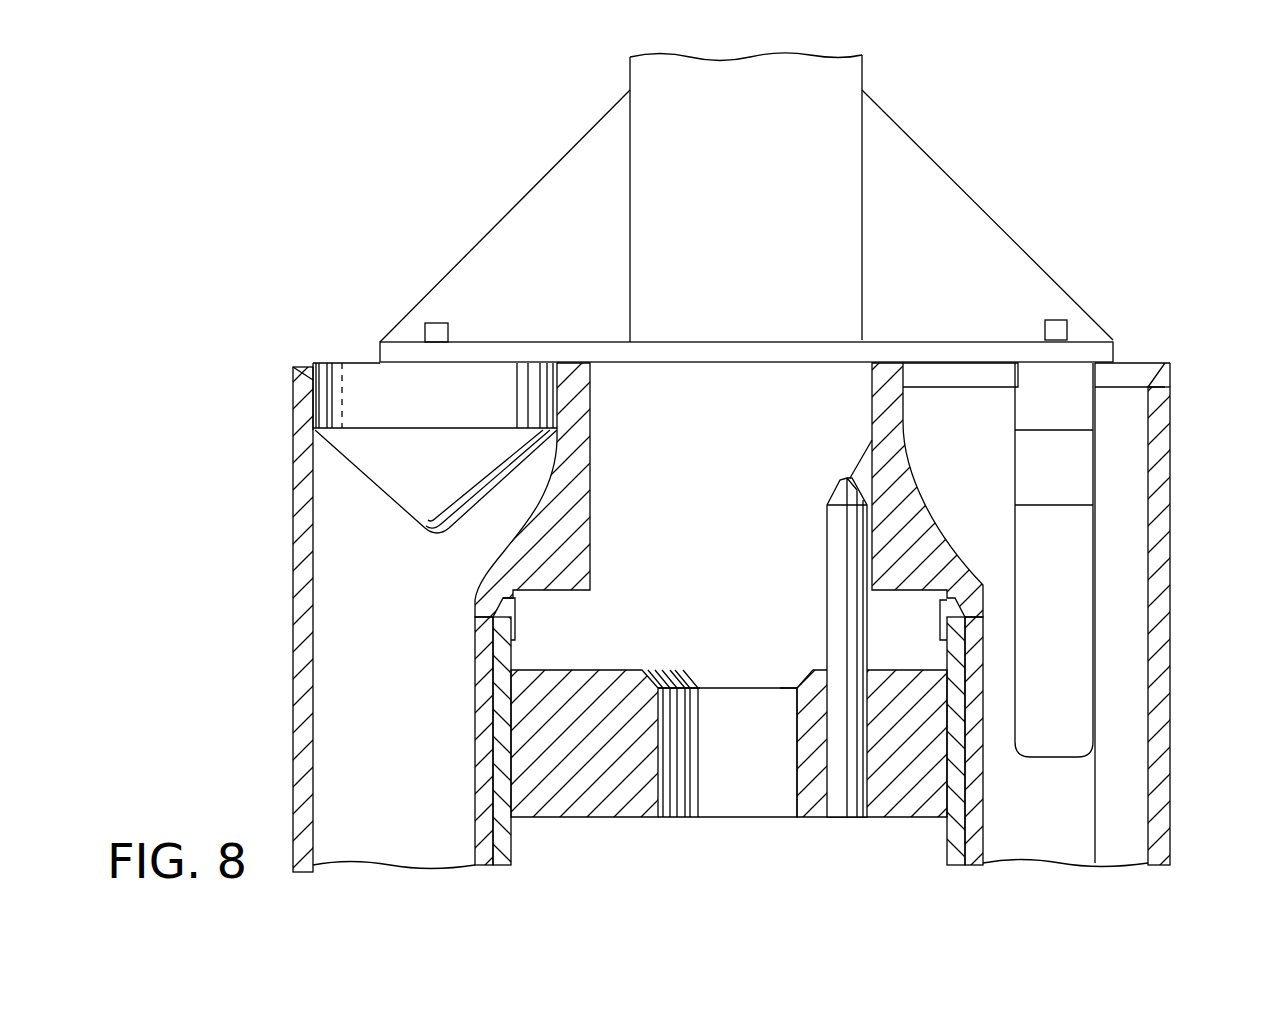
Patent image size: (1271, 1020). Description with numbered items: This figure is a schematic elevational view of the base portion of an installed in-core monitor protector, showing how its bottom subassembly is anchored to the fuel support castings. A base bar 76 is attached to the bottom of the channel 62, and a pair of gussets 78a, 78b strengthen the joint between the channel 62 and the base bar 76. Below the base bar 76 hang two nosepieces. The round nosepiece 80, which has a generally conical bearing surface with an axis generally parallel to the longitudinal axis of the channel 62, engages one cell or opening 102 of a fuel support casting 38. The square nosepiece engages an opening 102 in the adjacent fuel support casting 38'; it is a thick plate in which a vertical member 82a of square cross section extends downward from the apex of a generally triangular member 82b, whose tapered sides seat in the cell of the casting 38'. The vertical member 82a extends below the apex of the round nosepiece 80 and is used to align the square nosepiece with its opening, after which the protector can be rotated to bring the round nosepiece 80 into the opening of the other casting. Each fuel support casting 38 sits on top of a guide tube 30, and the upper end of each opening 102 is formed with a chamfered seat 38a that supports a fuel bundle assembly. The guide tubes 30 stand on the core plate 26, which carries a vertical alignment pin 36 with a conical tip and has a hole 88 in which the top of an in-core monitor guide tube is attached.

The channel 62 is at (865, 72).
The gusset 78a is at (988, 215).
The gusset 78b is at (505, 213).
The base bar 76 is at (705, 352).
The fuel support casting 38 is at (253, 619).
The chamfered seat 38a is at (307, 365).
The adjacent fuel support casting 38' is at (1207, 614).
The opening 102 is at (551, 400).
The round nosepiece 80 is at (390, 500).
The guide tube 30 is at (505, 832).
The core plate 26 is at (618, 818).
The hole 88 is at (662, 745).
The vertical alignment pin 36 is at (837, 623).
The vertical member 82a is at (1093, 640).
The generally triangular member 82b is at (1040, 468).